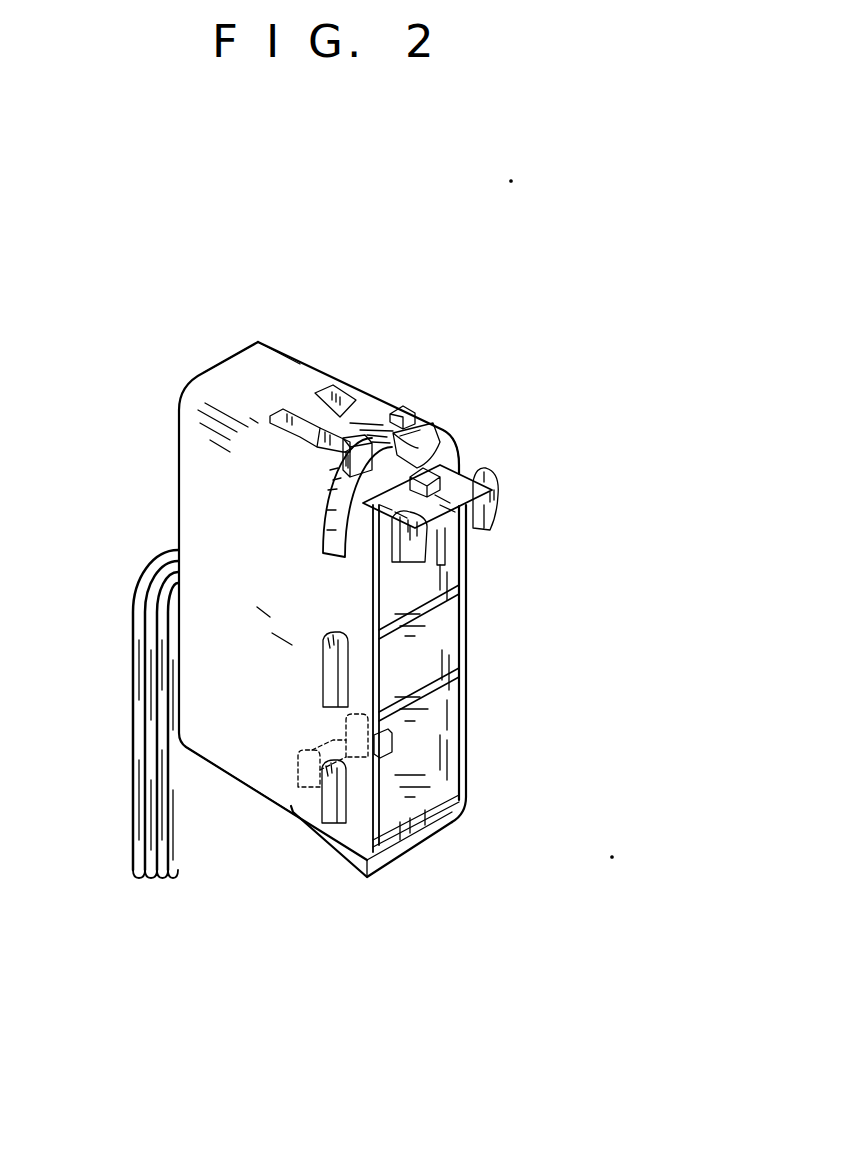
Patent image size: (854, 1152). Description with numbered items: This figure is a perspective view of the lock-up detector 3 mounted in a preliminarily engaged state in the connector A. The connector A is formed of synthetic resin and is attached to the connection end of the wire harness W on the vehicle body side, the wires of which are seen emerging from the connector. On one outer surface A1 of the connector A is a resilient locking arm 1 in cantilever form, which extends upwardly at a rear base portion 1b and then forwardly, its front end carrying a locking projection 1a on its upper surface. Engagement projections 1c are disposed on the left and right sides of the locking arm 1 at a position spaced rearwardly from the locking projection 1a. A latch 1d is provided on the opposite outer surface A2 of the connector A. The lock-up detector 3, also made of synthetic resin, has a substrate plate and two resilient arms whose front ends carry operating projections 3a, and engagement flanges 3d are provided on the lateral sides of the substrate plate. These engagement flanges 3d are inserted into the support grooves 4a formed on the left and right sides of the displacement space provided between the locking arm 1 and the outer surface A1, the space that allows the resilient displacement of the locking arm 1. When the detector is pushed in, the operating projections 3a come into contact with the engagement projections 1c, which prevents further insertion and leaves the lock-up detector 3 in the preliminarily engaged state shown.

The connector A is at (233, 390).
The outer surface A1 is at (271, 378).
The outer surface A2 is at (253, 786).
The resilient locking arm 1 is at (378, 423).
The locking projection 1a is at (428, 444).
The rear base portion 1b is at (318, 392).
The engagement projections 1c is at (405, 413).
The latch 1d is at (411, 858).
The lock-up detector 3 is at (474, 527).
The operating projections 3a is at (433, 427).
The engagement flanges 3d is at (328, 442).
The support grooves 4a is at (327, 548).
The wire harness W is at (133, 731).